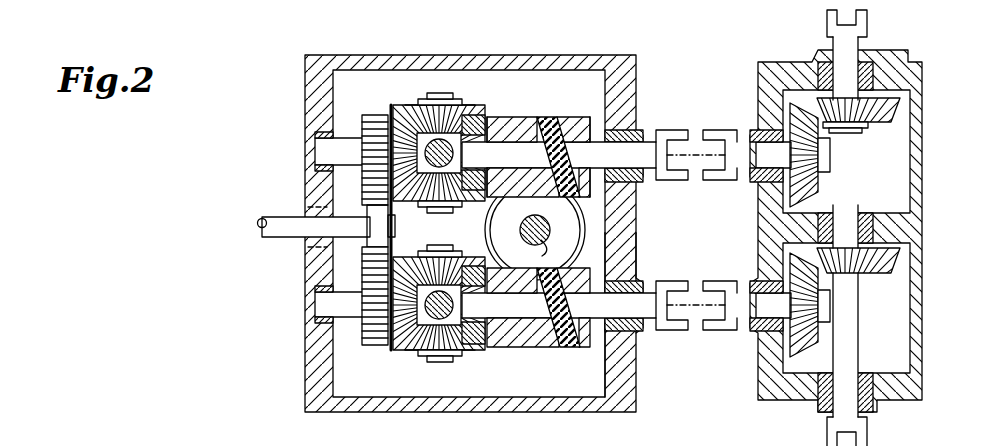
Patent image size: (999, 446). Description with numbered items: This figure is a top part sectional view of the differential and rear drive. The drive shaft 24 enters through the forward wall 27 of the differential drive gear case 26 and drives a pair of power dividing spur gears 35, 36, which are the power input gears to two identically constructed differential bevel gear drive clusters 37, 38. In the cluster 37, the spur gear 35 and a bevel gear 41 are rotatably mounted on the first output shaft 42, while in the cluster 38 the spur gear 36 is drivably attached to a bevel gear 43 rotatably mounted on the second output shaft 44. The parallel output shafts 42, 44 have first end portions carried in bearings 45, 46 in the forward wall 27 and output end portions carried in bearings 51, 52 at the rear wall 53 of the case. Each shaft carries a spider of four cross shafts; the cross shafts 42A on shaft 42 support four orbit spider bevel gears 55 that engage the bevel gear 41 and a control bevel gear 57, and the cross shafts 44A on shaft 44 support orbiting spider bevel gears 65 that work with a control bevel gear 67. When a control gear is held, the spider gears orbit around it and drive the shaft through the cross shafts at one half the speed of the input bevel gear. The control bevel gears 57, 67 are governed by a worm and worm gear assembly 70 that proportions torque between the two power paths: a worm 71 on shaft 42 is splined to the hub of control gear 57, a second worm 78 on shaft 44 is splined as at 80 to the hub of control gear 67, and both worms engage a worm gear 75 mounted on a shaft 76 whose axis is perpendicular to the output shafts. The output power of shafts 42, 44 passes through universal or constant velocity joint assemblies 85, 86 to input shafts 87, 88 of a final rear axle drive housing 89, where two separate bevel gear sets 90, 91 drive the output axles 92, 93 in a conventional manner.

The drive shaft 24 is at (273, 213).
The differential drive gear case 26 is at (304, 93).
The forward wall 27 is at (311, 350).
The power dividing spur gear 35 is at (380, 345).
The power dividing spur gear 36 is at (375, 115).
The differential bevel gear drive cluster 37 is at (468, 357).
The differential bevel gear drive cluster 38 is at (477, 112).
The bevel gear 41 is at (395, 335).
The first output shaft 42 is at (642, 318).
The cross shafts 42A is at (437, 248).
The bevel gear 43 is at (419, 112).
The second output shaft 44 is at (628, 163).
The cross shafts 44A is at (454, 153).
The bearing 45 is at (320, 292).
The bearing 46 is at (320, 138).
The bearing 51 is at (622, 290).
The bearing 52 is at (625, 128).
The rear wall 53 is at (625, 208).
The orbit spider bevel gears 55 is at (450, 358).
The control bevel gear 57 is at (497, 339).
The orbiting spider bevel gears 65 is at (436, 100).
The control bevel gear 67 is at (500, 117).
The worm and worm gear assembly 70 is at (560, 232).
The worm 71 is at (577, 346).
The worm gear 75 is at (545, 211).
The shaft 76 is at (533, 253).
The second worm 78 is at (577, 117).
The spline 80 is at (512, 117).
The universal or constant velocity joint assembly 85 is at (697, 336).
The universal or constant velocity joint assembly 86 is at (700, 108).
The input shaft 87 is at (745, 322).
The input shaft 88 is at (760, 152).
The final rear axle drive housing 89 is at (917, 67).
The bevel gear set 90 is at (866, 289).
The bevel gear set 91 is at (836, 143).
The output axle 92 is at (853, 352).
The output axle 93 is at (850, 46).